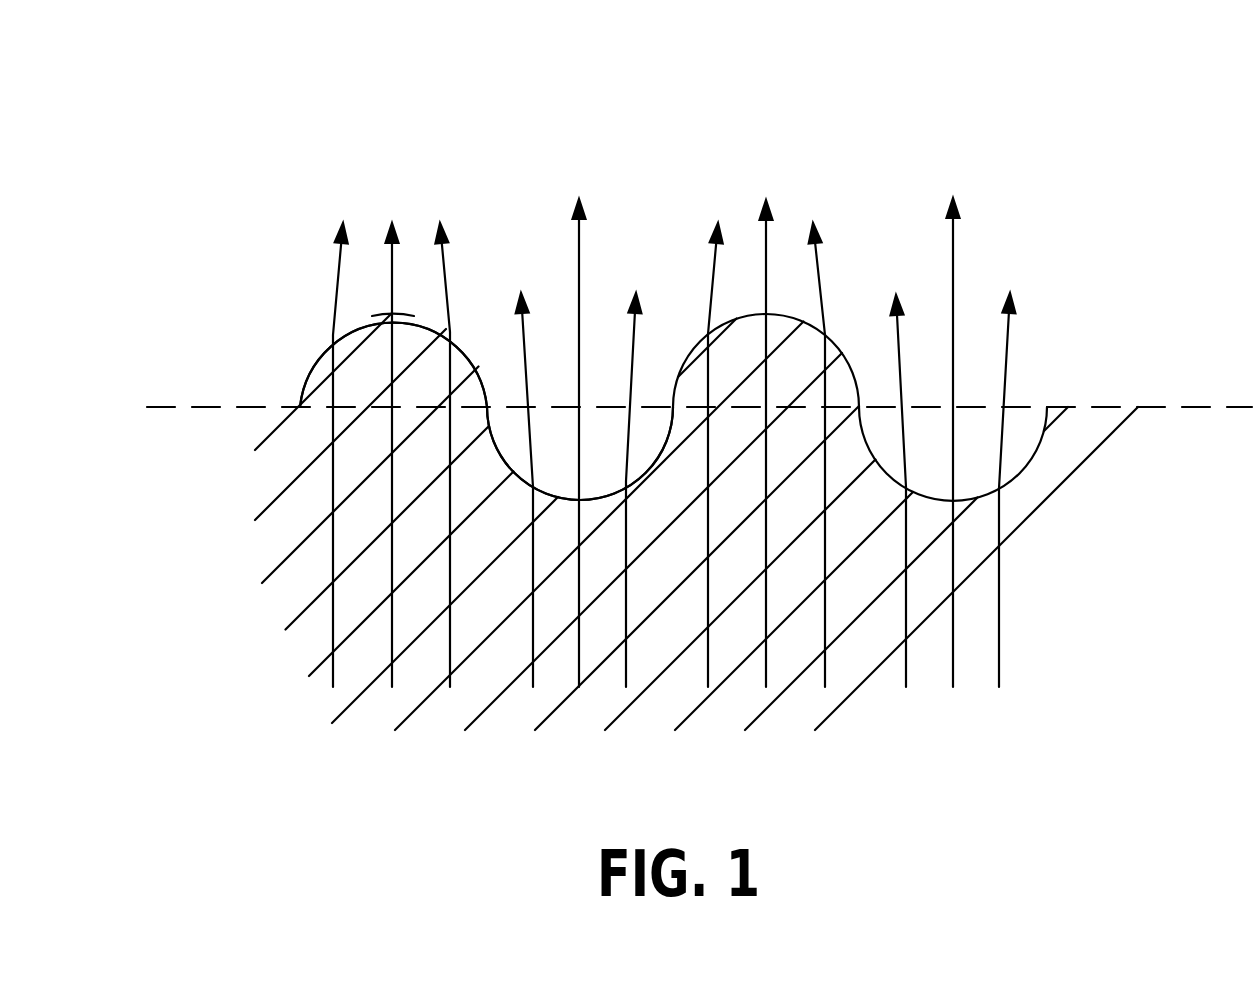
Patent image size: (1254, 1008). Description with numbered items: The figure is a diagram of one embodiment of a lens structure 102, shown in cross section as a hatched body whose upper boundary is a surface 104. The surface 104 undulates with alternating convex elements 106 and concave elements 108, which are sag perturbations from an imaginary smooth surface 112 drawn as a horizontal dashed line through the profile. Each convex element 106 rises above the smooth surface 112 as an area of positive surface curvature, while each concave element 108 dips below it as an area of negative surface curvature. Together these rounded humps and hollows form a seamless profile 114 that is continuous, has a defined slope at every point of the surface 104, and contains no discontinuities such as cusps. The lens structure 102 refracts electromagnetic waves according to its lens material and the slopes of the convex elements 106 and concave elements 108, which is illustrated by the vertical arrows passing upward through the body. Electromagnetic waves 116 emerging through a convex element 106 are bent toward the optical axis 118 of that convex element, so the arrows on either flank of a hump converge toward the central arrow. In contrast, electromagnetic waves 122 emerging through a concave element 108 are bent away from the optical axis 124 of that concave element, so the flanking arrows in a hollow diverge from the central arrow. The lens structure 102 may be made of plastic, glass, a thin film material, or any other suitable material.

The lens structure 102 is at (225, 80).
The surface 104 is at (310, 360).
The convex elements 106 is at (380, 313).
The concave elements 108 is at (583, 505).
The imaginary smooth surface 112 is at (198, 407).
The seamless profile 114 is at (1028, 467).
The electromagnetic waves 116 is at (335, 283).
The optical axis 118 is at (395, 260).
The electromagnetic waves 122 is at (527, 358).
The optical axis 124 is at (580, 256).